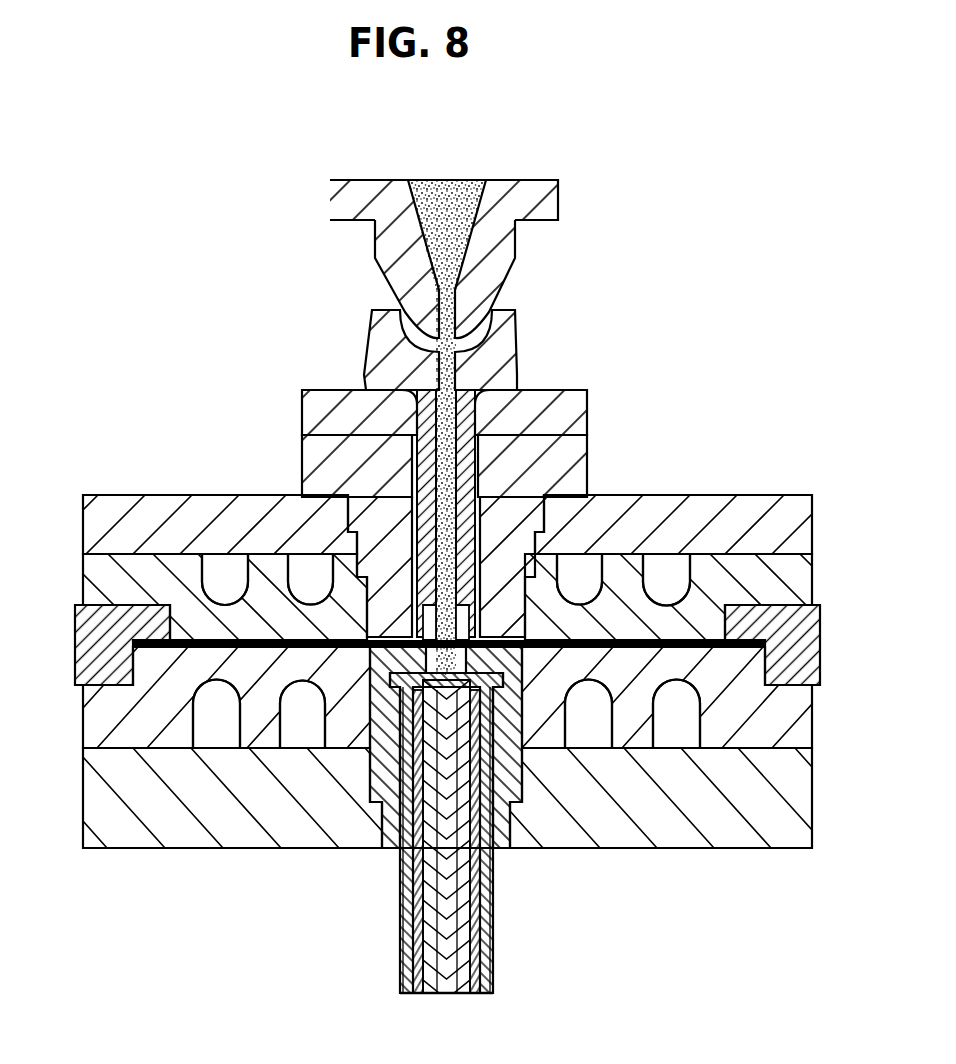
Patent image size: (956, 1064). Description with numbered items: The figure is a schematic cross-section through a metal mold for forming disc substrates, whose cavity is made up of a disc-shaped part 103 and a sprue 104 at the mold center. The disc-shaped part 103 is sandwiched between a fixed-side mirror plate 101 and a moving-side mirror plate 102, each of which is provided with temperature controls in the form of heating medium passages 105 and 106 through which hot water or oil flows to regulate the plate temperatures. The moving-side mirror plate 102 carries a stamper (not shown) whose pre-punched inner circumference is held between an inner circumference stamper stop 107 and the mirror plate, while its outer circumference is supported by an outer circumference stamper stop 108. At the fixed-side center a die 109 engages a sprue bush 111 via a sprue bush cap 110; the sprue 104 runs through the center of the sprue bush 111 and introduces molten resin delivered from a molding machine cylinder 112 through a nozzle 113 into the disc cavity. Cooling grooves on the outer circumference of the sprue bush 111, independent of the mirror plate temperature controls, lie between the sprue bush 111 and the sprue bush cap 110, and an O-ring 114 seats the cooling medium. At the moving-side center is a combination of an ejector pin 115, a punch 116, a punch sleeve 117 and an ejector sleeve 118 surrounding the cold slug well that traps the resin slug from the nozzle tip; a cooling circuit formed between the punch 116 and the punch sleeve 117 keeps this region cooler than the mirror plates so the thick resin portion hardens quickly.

The fixed-side mirror plate 101 is at (95, 567).
The moving-side mirror plate 102 is at (103, 717).
The disc-shaped part 103 is at (188, 637).
The sprue 104 is at (450, 485).
The heating medium passage 105 is at (217, 557).
The heating medium passage 106 is at (203, 733).
The inner circumference stamper stop 107 is at (363, 755).
The outer circumference stamper stop 108 is at (95, 625).
The die 109 is at (357, 503).
The sprue bush cap 110 is at (533, 400).
The sprue bush 111 is at (383, 523).
The molding machine cylinder 112 is at (558, 193).
The nozzle 113 is at (475, 283).
The O-ring 114 is at (412, 600).
The ejector pin 115 is at (445, 965).
The punch 116 is at (400, 867).
The punch sleeve 117 is at (487, 855).
The ejector sleeve 118 is at (482, 920).